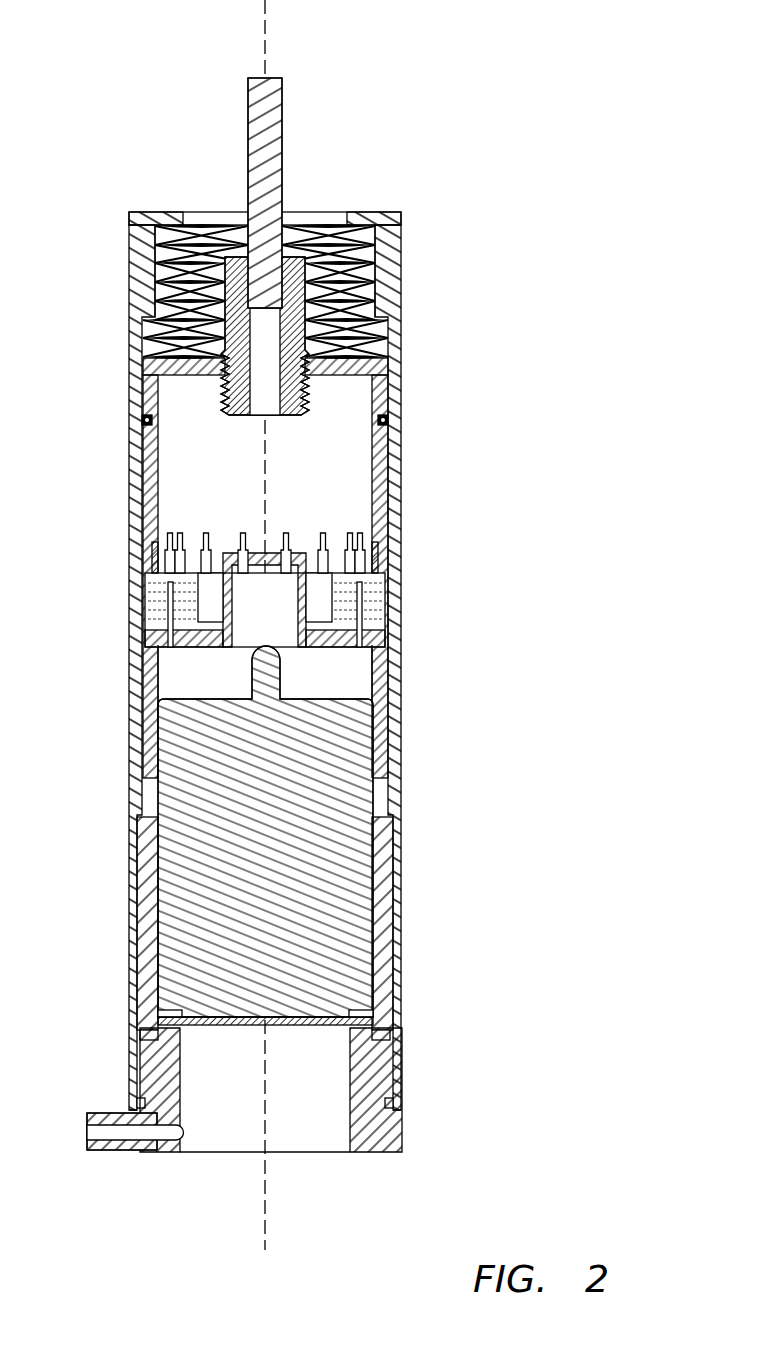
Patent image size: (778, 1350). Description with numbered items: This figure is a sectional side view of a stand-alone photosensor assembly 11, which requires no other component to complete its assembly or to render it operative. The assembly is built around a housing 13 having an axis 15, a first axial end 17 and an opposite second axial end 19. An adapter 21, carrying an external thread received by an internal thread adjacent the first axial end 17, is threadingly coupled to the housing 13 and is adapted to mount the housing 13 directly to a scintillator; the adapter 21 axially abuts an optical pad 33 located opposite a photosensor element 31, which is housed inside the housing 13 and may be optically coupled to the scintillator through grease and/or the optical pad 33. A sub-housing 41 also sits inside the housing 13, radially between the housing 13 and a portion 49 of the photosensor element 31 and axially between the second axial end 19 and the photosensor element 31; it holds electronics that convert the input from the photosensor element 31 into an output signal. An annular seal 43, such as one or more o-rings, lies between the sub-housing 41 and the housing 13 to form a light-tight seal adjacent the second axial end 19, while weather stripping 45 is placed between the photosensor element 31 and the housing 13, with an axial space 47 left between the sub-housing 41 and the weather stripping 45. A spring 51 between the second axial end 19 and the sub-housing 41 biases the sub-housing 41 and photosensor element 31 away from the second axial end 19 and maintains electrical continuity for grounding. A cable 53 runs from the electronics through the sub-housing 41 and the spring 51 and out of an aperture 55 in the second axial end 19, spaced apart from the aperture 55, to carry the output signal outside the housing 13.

The photosensor assembly 11 is at (584, 85).
The housing 13 is at (401, 505).
The axis 15 is at (265, 40).
The first axial end 17 is at (402, 1107).
The second axial end 19 is at (401, 212).
The adapter 21 is at (390, 1134).
The photosensor element 31 is at (330, 884).
The optical pad 33 is at (303, 1028).
The sub-housing 41 is at (380, 462).
The annular seal 43 is at (389, 418).
The weather stripping 45 is at (146, 1032).
The axial space 47 is at (148, 800).
The portion of the photosensor element 49 is at (121, 1035).
The spring 51 is at (132, 256).
The cable 53 is at (282, 118).
The aperture 55 is at (310, 215).